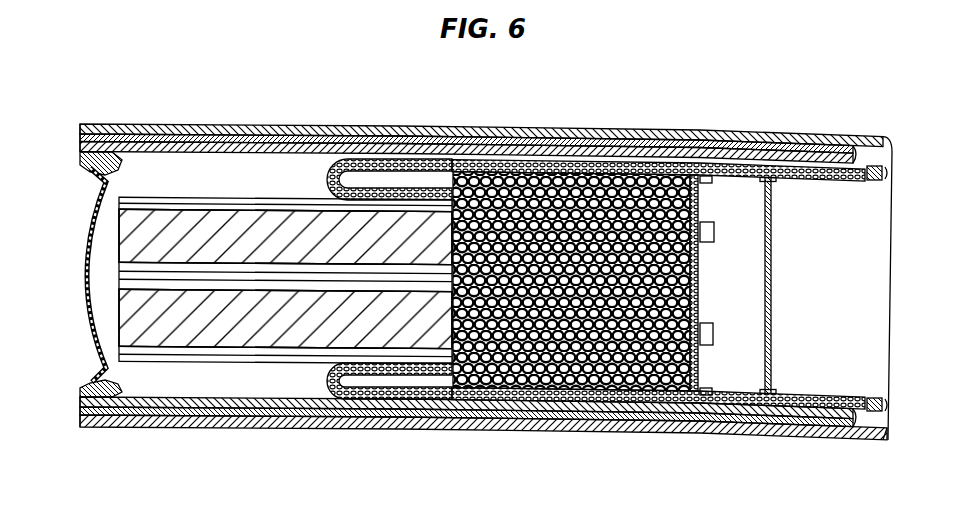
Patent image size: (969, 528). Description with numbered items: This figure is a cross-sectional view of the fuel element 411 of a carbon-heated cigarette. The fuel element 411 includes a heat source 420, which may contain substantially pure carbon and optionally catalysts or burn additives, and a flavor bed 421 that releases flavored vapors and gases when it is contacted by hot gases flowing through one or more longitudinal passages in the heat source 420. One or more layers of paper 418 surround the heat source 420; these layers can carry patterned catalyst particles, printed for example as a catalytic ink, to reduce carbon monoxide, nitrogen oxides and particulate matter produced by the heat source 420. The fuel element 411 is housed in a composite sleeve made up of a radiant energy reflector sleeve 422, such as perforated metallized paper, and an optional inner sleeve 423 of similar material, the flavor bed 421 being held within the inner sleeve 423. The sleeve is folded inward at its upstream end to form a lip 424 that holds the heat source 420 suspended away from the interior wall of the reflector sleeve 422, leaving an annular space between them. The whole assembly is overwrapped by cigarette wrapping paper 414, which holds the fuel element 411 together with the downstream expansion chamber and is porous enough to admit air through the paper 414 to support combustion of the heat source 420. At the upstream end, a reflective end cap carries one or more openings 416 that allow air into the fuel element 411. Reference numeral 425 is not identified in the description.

The fuel element 411 is at (380, 120).
The cigarette wrapping paper 414 is at (838, 138).
The openings 416 is at (88, 214).
The layers of paper 418 is at (227, 200).
The heat source 420 is at (125, 315).
The flavor bed 421 is at (620, 410).
The radiant energy reflector sleeve 422 is at (855, 150).
The inner sleeve 423 is at (886, 180).
The lip 424 is at (326, 181).
The inner layer of container wall 425 is at (170, 167).